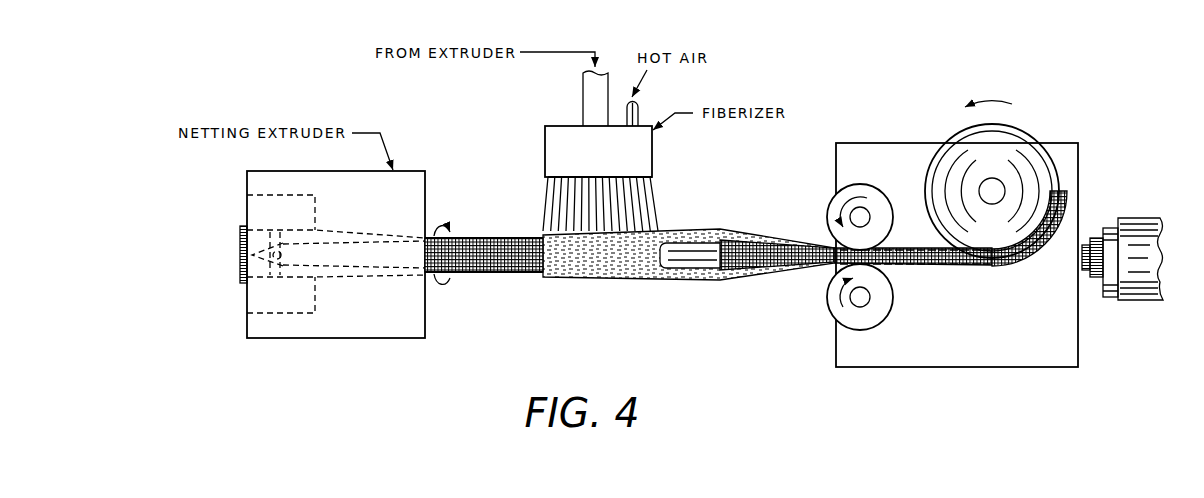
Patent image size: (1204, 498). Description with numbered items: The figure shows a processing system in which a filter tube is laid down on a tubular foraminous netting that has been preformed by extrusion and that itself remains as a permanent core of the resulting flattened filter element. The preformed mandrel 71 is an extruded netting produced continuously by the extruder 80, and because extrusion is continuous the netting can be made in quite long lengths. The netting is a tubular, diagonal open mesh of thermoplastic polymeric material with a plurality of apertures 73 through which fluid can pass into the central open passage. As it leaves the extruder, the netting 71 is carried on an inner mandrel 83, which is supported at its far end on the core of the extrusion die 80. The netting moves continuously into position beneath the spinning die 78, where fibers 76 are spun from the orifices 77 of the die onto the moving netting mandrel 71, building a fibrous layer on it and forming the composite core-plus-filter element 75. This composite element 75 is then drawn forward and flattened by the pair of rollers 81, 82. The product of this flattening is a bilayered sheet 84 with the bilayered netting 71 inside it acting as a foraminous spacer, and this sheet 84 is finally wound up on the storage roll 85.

The preformed mandrel 71 is at (483, 265).
The apertures 73 is at (512, 275).
The composite core-plus-filter element 75 is at (728, 230).
The fibers 76 is at (650, 208).
The orifices 77 is at (633, 175).
The spinning die 78 is at (545, 138).
The extruder 80 is at (432, 178).
The roller 81 is at (877, 197).
The roller 82 is at (883, 310).
The mandrel 83 is at (620, 262).
The bilayered sheet 84 is at (957, 267).
The storage roll 85 is at (1037, 130).